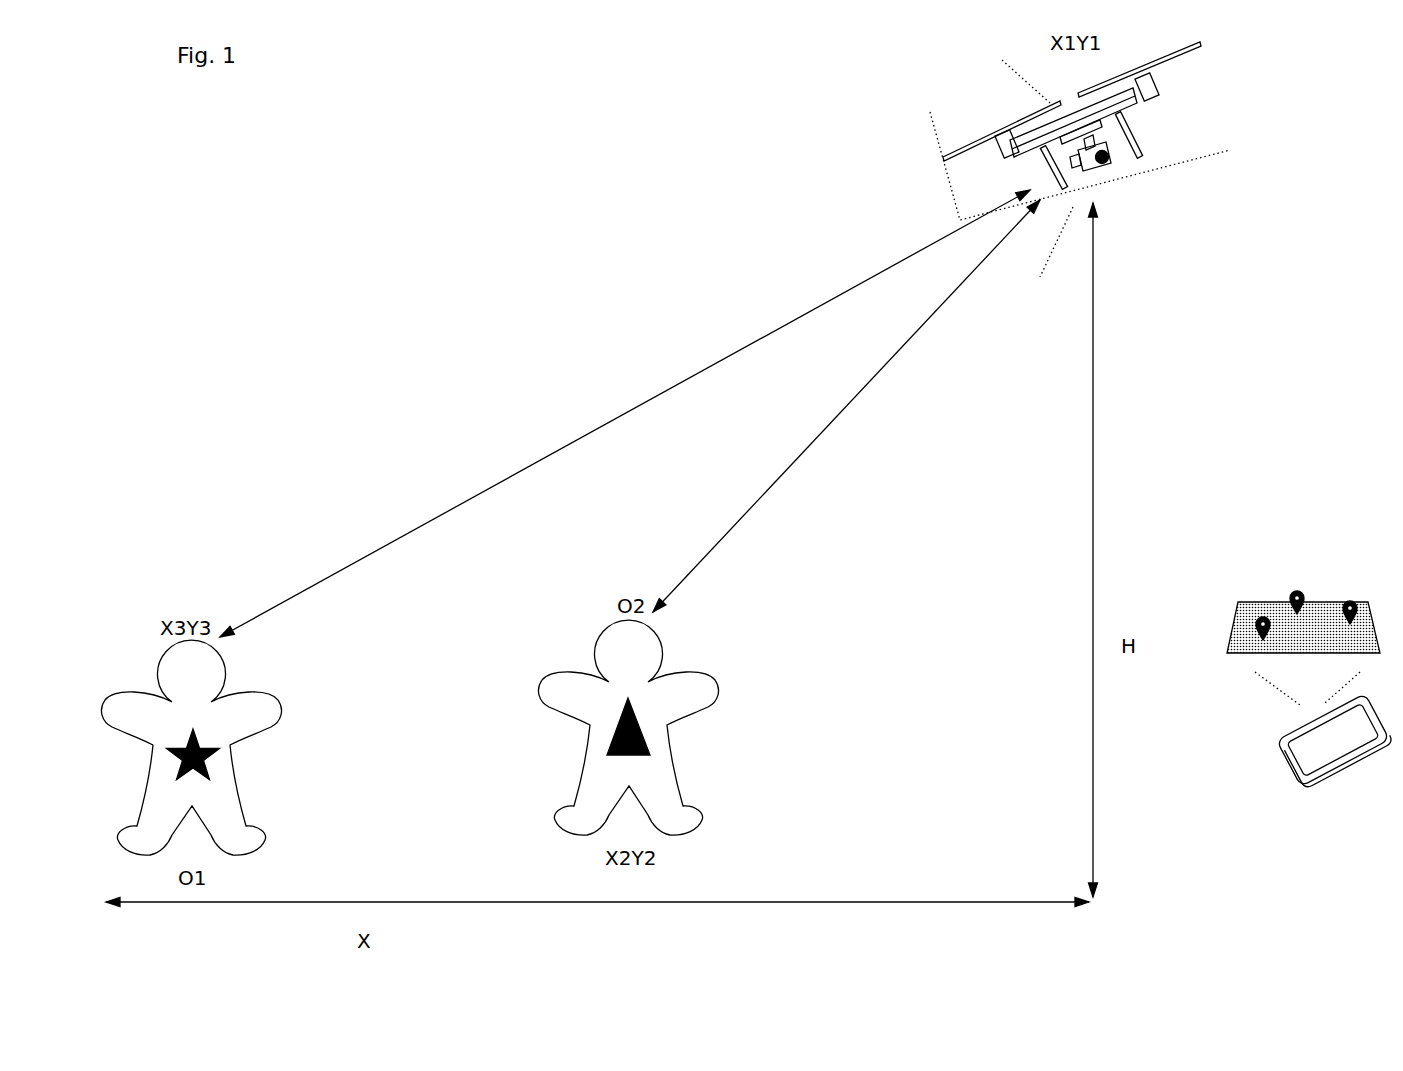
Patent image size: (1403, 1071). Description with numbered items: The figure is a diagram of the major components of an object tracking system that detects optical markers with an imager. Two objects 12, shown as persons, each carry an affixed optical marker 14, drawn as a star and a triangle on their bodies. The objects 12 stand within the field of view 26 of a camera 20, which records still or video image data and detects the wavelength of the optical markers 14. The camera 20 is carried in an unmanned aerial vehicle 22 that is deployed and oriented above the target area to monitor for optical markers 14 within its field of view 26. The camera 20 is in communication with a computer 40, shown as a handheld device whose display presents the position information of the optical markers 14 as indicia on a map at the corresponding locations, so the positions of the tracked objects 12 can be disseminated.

The object 12 is at (158, 660).
The optical marker 14 is at (208, 757).
The camera 20 is at (1100, 167).
The unmanned aerial vehicle 22 is at (1005, 127).
The field of view 26 is at (1010, 70).
The computer 40 is at (1300, 777).